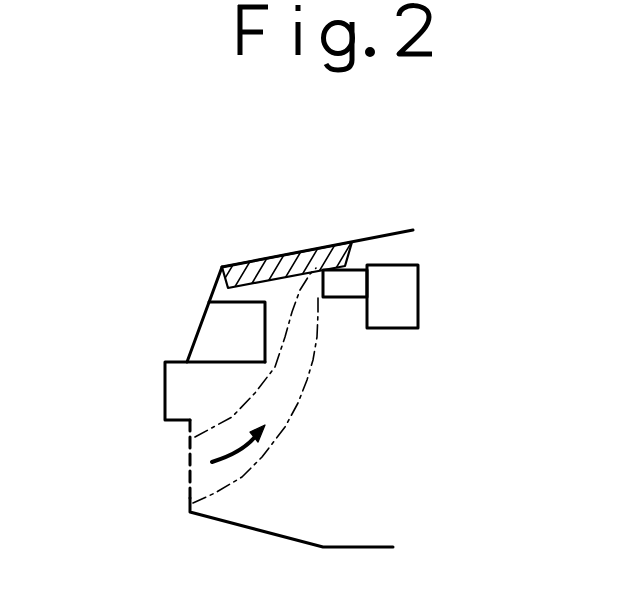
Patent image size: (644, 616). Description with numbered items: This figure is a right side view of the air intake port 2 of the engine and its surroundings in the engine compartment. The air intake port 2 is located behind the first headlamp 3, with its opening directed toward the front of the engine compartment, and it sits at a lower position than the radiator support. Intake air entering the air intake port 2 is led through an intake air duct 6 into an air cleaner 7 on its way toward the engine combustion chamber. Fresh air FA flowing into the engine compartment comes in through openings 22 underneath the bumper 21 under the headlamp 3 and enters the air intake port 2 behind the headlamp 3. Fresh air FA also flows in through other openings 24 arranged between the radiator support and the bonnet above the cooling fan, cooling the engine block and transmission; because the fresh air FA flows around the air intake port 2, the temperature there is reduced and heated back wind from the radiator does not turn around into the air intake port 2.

The air intake port 2 is at (320, 247).
The first headlamp 3 is at (207, 332).
The intake air duct 6 is at (353, 267).
The air cleaner 7 is at (420, 280).
The bumper 21 is at (165, 400).
The openings 22 is at (190, 482).
The other openings 24 is at (250, 262).
The fresh air FA is at (248, 445).